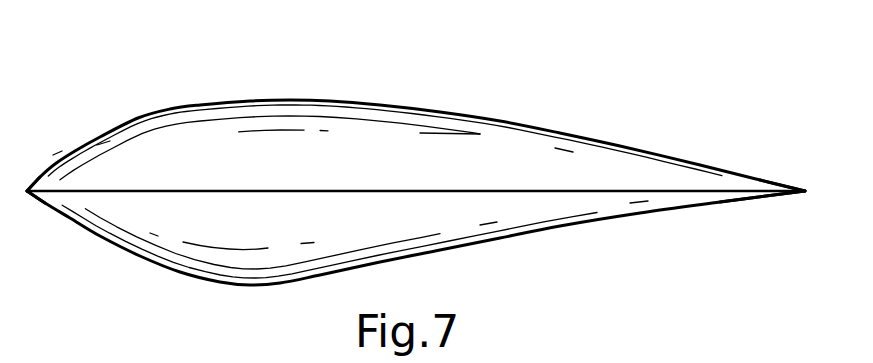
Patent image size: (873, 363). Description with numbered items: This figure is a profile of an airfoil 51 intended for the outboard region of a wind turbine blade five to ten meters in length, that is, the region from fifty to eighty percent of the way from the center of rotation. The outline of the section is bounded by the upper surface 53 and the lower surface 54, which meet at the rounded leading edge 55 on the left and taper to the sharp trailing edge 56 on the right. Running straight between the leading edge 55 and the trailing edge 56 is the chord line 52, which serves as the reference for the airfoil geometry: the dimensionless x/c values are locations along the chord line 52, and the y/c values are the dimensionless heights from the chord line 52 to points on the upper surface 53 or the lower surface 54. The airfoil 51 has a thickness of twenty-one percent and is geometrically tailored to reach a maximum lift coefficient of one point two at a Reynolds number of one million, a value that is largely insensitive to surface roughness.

The airfoil 51 is at (403, 179).
The chord line 52 is at (118, 191).
The upper surface 53 is at (281, 100).
The lower surface 54 is at (209, 285).
The leading edge 55 is at (26, 186).
The trailing edge 56 is at (772, 184).